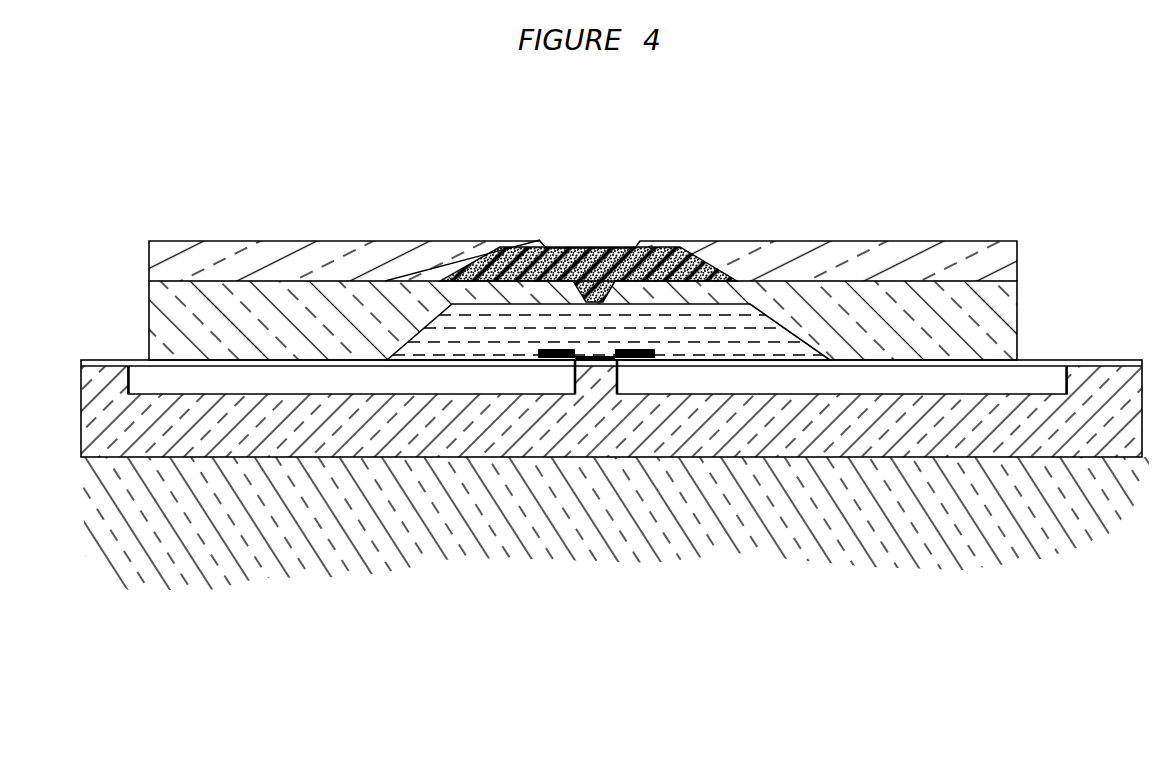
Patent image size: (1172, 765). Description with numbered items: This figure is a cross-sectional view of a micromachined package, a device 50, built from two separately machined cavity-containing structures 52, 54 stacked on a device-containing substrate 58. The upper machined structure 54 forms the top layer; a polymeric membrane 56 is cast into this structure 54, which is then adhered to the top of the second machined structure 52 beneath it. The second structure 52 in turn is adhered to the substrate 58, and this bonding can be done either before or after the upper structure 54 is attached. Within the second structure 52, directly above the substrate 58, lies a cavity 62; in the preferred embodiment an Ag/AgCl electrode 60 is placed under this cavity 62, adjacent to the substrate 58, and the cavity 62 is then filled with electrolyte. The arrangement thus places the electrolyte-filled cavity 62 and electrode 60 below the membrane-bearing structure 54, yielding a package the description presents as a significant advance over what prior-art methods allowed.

The device 50 is at (696, 184).
The second machined structure 52 is at (583, 320).
The machined structure 54 is at (583, 260).
The polymeric membrane 56 is at (604, 238).
The substrate 58 is at (616, 523).
The Ag/AgCl electrode 60 is at (636, 362).
The cavity 62 is at (763, 318).